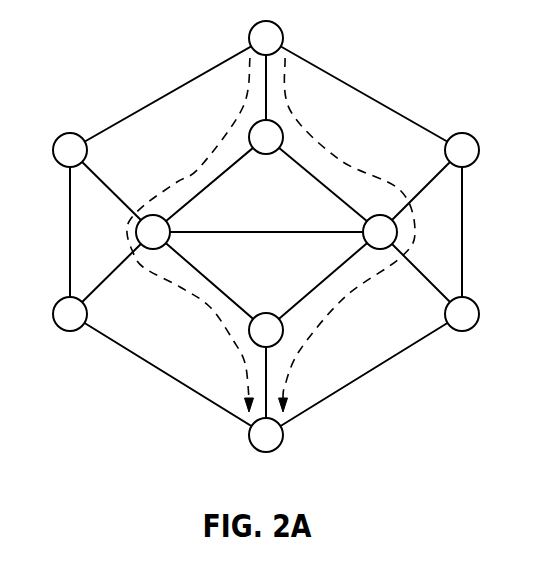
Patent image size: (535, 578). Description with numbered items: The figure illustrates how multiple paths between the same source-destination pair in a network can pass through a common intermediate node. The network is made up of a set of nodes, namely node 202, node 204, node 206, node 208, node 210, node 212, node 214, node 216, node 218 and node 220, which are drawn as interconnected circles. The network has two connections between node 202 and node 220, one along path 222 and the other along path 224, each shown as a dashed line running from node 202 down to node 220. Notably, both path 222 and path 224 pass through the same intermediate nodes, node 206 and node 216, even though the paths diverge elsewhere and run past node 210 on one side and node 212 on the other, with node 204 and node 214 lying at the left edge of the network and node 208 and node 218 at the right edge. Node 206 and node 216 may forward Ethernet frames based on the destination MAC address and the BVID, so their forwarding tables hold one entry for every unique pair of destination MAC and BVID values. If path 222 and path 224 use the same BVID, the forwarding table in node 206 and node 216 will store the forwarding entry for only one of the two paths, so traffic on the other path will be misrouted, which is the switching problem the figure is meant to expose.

The node 202 is at (242, 37).
The node 204 is at (55, 146).
The node 206 is at (266, 151).
The node 208 is at (478, 146).
The node 210 is at (171, 238).
The node 212 is at (357, 238).
The node 214 is at (55, 323).
The node 216 is at (266, 316).
The node 218 is at (476, 323).
The node 220 is at (266, 448).
The path 222 is at (190, 235).
The path 224 is at (347, 235).